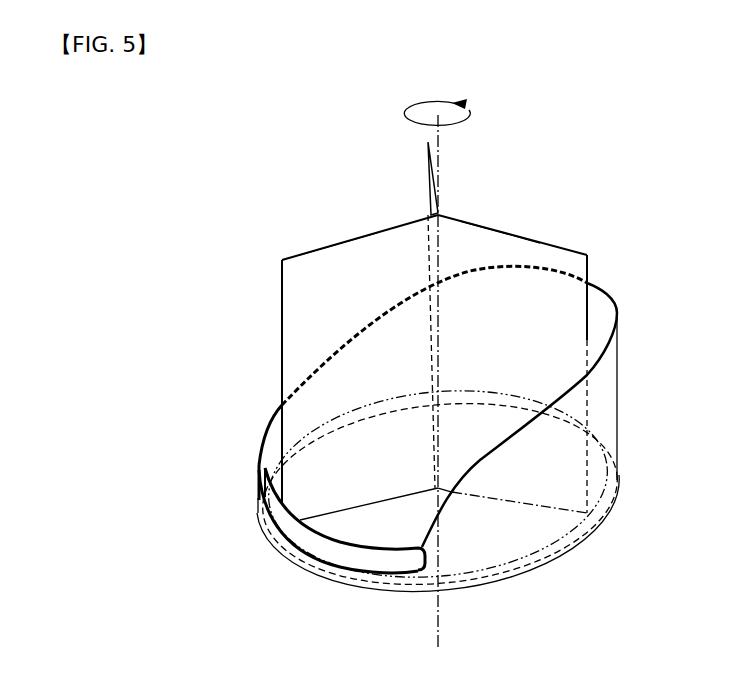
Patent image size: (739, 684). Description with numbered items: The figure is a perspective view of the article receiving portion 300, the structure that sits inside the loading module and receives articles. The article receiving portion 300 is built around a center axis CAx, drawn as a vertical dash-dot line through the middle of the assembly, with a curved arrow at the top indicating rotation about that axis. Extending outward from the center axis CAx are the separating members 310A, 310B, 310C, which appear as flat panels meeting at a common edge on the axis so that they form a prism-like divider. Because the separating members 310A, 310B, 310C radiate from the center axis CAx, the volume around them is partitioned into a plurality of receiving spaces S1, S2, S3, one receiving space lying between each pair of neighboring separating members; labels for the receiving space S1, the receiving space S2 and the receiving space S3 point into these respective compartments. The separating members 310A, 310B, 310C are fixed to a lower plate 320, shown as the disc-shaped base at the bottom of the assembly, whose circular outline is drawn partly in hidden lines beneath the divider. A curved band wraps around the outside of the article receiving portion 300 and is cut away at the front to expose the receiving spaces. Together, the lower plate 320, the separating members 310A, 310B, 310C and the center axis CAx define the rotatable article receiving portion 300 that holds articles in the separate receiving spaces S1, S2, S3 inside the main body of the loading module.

The article receiving portion 300 is at (254, 406).
The separating member 310A is at (322, 330).
The separating member 310B is at (429, 200).
The separating member 310C is at (567, 265).
The lower plate 320 is at (503, 537).
The receiving space S1 is at (372, 518).
The receiving space S2 is at (484, 202).
The receiving space S3 is at (364, 209).
The center axis CAx is at (438, 617).